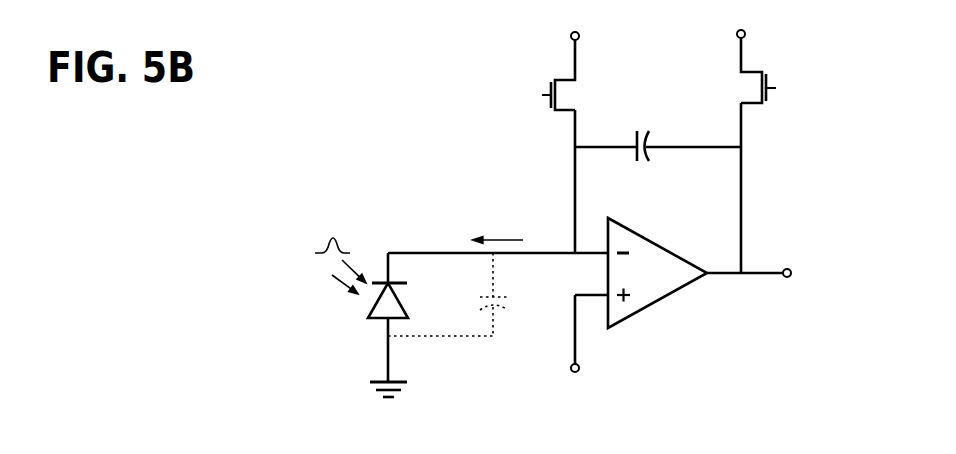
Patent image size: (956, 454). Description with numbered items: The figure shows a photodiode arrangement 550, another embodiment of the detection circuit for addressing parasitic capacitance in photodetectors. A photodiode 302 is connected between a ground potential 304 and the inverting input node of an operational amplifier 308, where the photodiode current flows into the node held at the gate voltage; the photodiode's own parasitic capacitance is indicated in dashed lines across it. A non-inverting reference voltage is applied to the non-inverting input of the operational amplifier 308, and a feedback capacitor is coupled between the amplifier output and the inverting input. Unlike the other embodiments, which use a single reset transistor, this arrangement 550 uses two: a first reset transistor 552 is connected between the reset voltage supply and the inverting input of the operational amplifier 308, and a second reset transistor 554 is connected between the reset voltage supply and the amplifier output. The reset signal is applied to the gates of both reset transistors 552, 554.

The photodiode arrangement 550 is at (281, 128).
The first reset transistor 552 is at (558, 113).
The second reset transistor 554 is at (754, 105).
The operational amplifier 308 is at (645, 310).
The photodiode 302 is at (333, 310).
The ground potential 304 is at (402, 380).